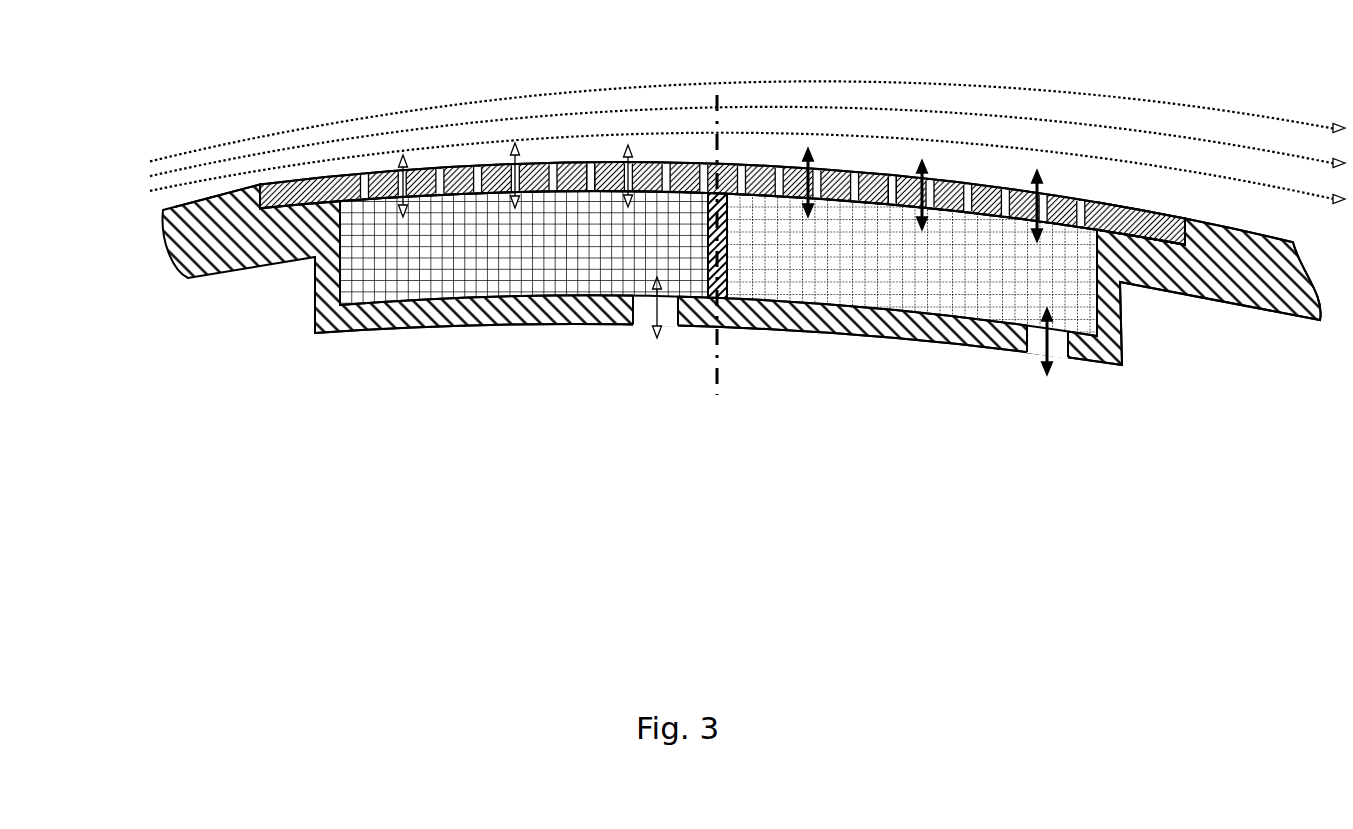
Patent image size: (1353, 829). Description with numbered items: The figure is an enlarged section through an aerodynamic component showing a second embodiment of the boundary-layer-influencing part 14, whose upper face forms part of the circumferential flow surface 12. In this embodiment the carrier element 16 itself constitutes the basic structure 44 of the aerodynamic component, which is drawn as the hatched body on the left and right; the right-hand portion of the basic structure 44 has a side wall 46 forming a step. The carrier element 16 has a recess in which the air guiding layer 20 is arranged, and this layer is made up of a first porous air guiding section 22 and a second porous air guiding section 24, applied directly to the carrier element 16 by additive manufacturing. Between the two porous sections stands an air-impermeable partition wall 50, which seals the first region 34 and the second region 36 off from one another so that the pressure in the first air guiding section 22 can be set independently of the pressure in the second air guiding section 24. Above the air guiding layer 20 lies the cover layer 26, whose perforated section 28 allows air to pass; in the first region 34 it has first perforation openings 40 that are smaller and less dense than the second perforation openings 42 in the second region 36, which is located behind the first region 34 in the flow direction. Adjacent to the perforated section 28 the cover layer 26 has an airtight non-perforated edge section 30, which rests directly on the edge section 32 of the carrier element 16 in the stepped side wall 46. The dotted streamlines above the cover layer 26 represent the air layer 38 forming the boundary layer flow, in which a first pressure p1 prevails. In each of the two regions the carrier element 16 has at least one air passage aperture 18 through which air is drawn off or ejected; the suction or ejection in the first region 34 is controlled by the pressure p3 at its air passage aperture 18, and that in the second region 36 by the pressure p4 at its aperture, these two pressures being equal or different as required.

The flow surface 12 is at (222, 193).
The boundary-layer-influencing part 14 is at (272, 338).
The carrier element 16 is at (331, 334).
The air passage aperture 18 is at (672, 349).
The air guiding layer 20 is at (635, 514).
The first porous air guiding section 22 is at (695, 280).
The second porous air guiding section 24 is at (855, 290).
The cover layer 26 is at (711, 147).
The perforated section 28 is at (497, 164).
The non-perforated edge section 30 is at (1117, 213).
The edge section 32 is at (1153, 238).
The first region 34 is at (543, 107).
The second region 36 is at (802, 98).
The air layer 38 is at (155, 153).
The first perforation openings 40 is at (590, 150).
The second perforation openings 42 is at (884, 162).
The basic structure 44 is at (1240, 352).
The side wall 46 is at (1130, 236).
The air-impermeable partition wall 50 is at (733, 277).
The first pressure p1 is at (854, 141).
The pressure p3 is at (634, 342).
The pressure p4 is at (1062, 374).